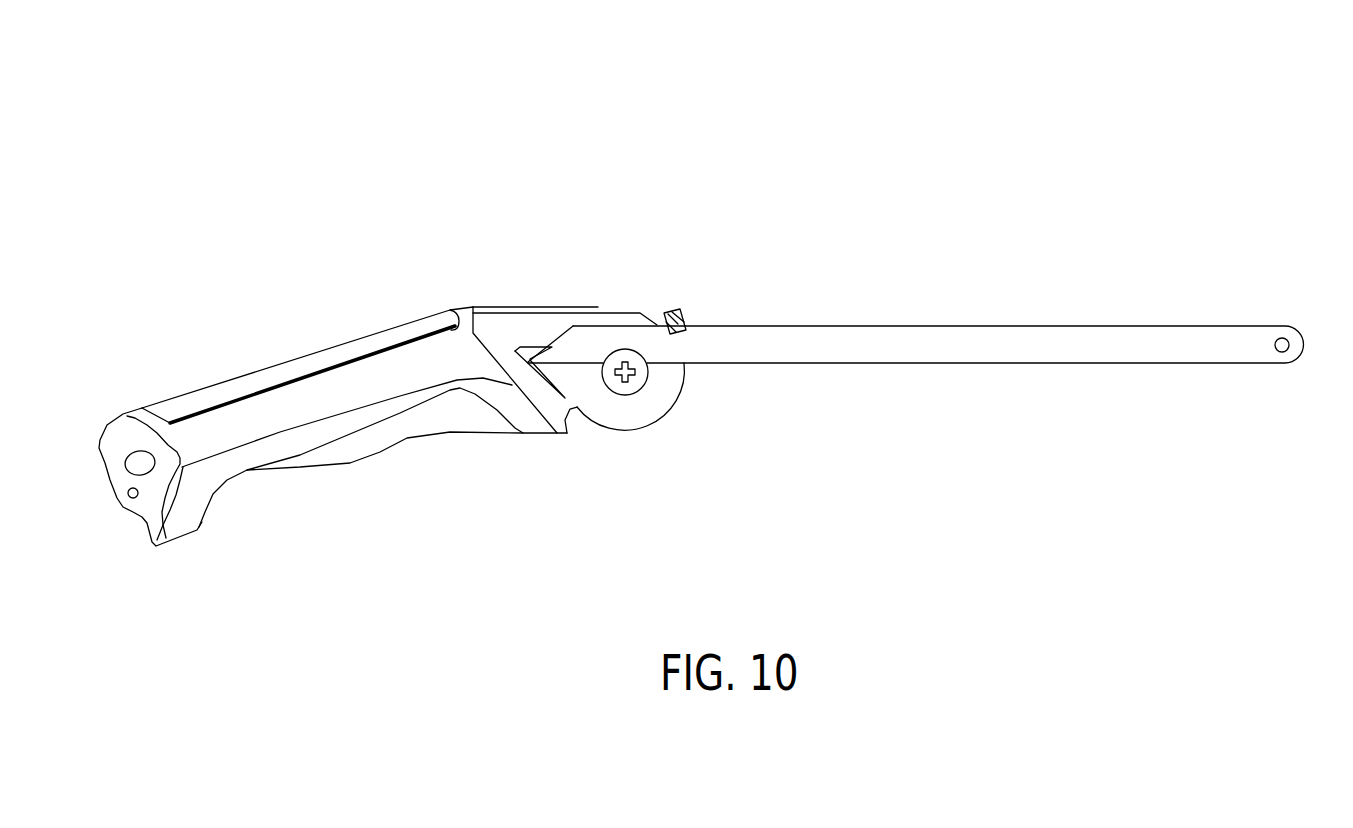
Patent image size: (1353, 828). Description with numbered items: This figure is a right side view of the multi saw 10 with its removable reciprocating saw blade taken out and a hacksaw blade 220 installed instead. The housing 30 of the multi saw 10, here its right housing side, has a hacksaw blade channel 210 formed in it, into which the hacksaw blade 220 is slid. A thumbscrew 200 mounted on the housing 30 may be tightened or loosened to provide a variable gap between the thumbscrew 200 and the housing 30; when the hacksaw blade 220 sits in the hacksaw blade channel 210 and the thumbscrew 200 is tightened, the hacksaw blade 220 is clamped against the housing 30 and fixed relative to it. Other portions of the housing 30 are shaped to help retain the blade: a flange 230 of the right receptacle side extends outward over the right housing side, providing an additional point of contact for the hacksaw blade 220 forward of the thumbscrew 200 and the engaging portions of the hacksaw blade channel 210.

The multi saw 10 is at (1036, 134).
The housing 30 is at (318, 310).
The thumbscrew 200 is at (638, 390).
The hacksaw blade channel 210 is at (563, 331).
The hacksaw blade 220 is at (856, 326).
The flange 230 is at (667, 313).